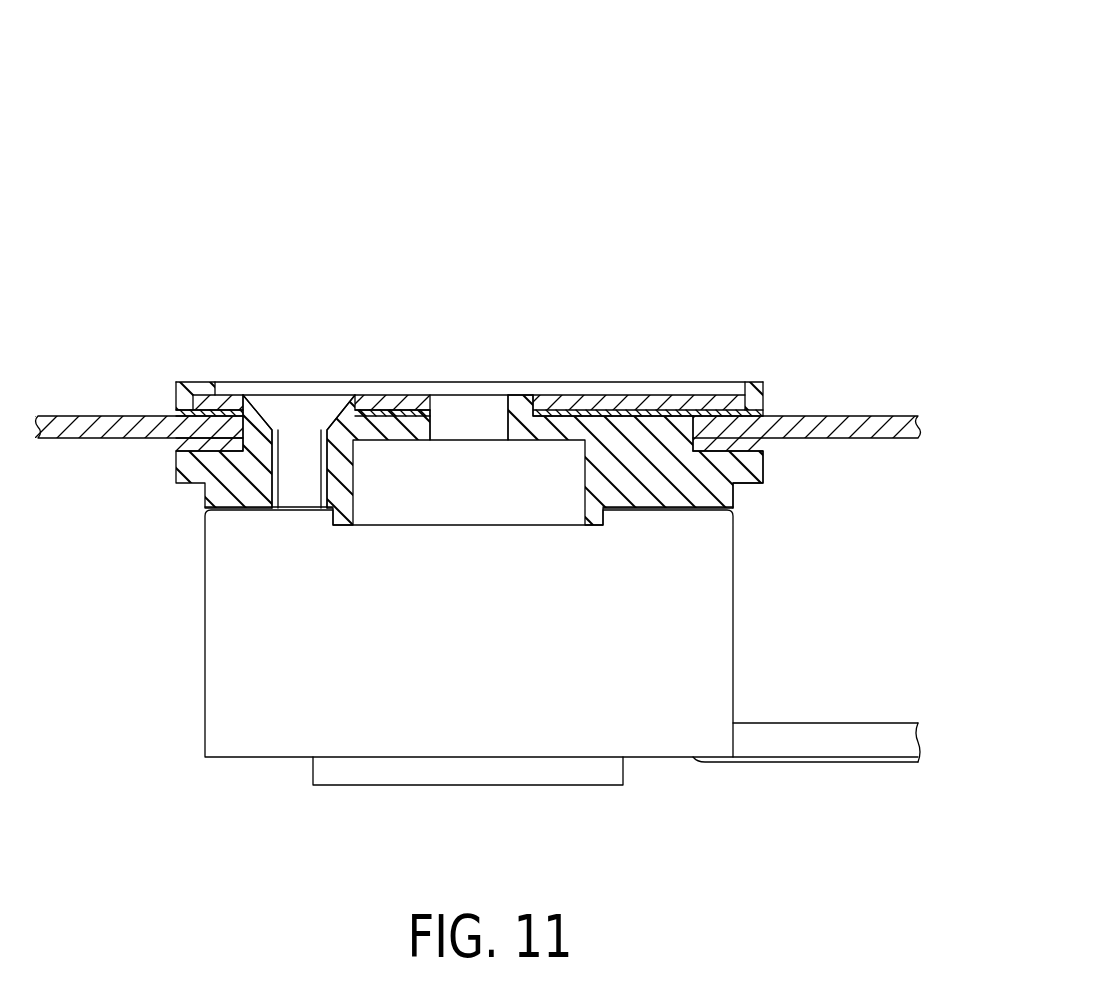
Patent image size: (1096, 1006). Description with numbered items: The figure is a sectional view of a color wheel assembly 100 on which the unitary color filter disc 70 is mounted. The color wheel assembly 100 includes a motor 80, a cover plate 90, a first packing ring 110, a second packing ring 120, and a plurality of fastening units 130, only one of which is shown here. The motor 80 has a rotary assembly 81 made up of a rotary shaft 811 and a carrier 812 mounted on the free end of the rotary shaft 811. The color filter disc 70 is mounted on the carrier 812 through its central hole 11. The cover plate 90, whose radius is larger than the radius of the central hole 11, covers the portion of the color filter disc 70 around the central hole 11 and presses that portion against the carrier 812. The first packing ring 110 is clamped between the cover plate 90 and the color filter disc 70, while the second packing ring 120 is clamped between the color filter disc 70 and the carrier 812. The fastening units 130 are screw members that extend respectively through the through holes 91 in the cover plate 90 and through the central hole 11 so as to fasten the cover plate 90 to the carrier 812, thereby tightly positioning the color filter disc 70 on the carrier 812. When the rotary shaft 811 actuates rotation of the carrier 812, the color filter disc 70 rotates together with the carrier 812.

The color wheel assembly 100 is at (688, 168).
The unitary color filter disc 70 is at (877, 408).
The motor 80 is at (200, 710).
The rotary assembly 81 is at (610, 257).
The rotary shaft 811 is at (472, 402).
The carrier 812 is at (570, 430).
The cover plate 90 is at (362, 376).
The through holes 91 is at (216, 406).
The central hole 11 is at (729, 410).
The first packing ring 110 is at (772, 398).
The second packing ring 120 is at (772, 453).
The fastening units 130 is at (291, 410).